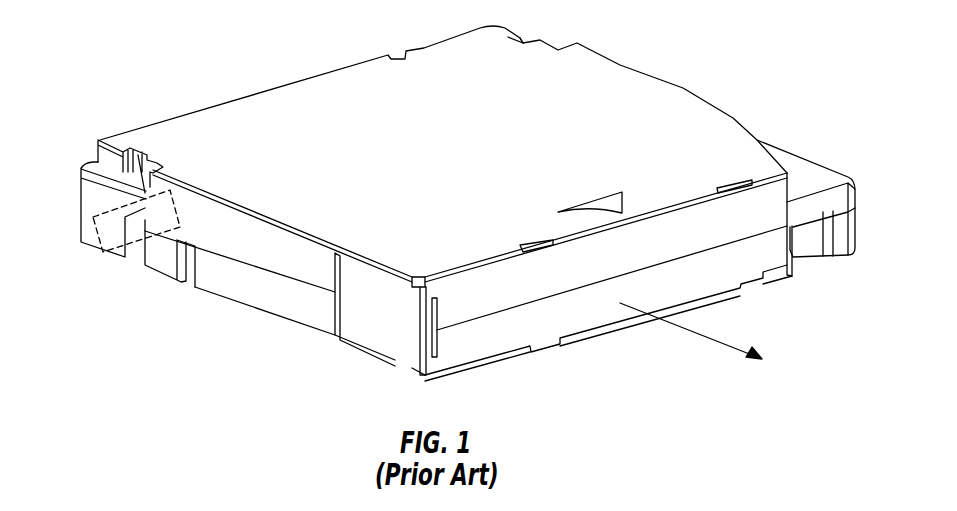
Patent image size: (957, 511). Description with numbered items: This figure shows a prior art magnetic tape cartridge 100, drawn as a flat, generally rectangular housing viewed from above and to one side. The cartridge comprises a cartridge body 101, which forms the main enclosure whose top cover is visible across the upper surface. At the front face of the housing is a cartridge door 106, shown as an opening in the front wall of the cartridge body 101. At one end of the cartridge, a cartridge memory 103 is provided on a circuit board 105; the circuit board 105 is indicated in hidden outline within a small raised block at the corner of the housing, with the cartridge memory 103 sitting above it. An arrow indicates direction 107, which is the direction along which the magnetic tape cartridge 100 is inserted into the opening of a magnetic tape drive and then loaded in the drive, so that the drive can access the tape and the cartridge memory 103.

The magnetic tape cartridge 100 is at (770, 68).
The cartridge body 101 is at (357, 62).
The cartridge memory 103 is at (133, 155).
The circuit board 105 is at (110, 227).
The cartridge door 106 is at (383, 313).
The direction 107 is at (708, 338).